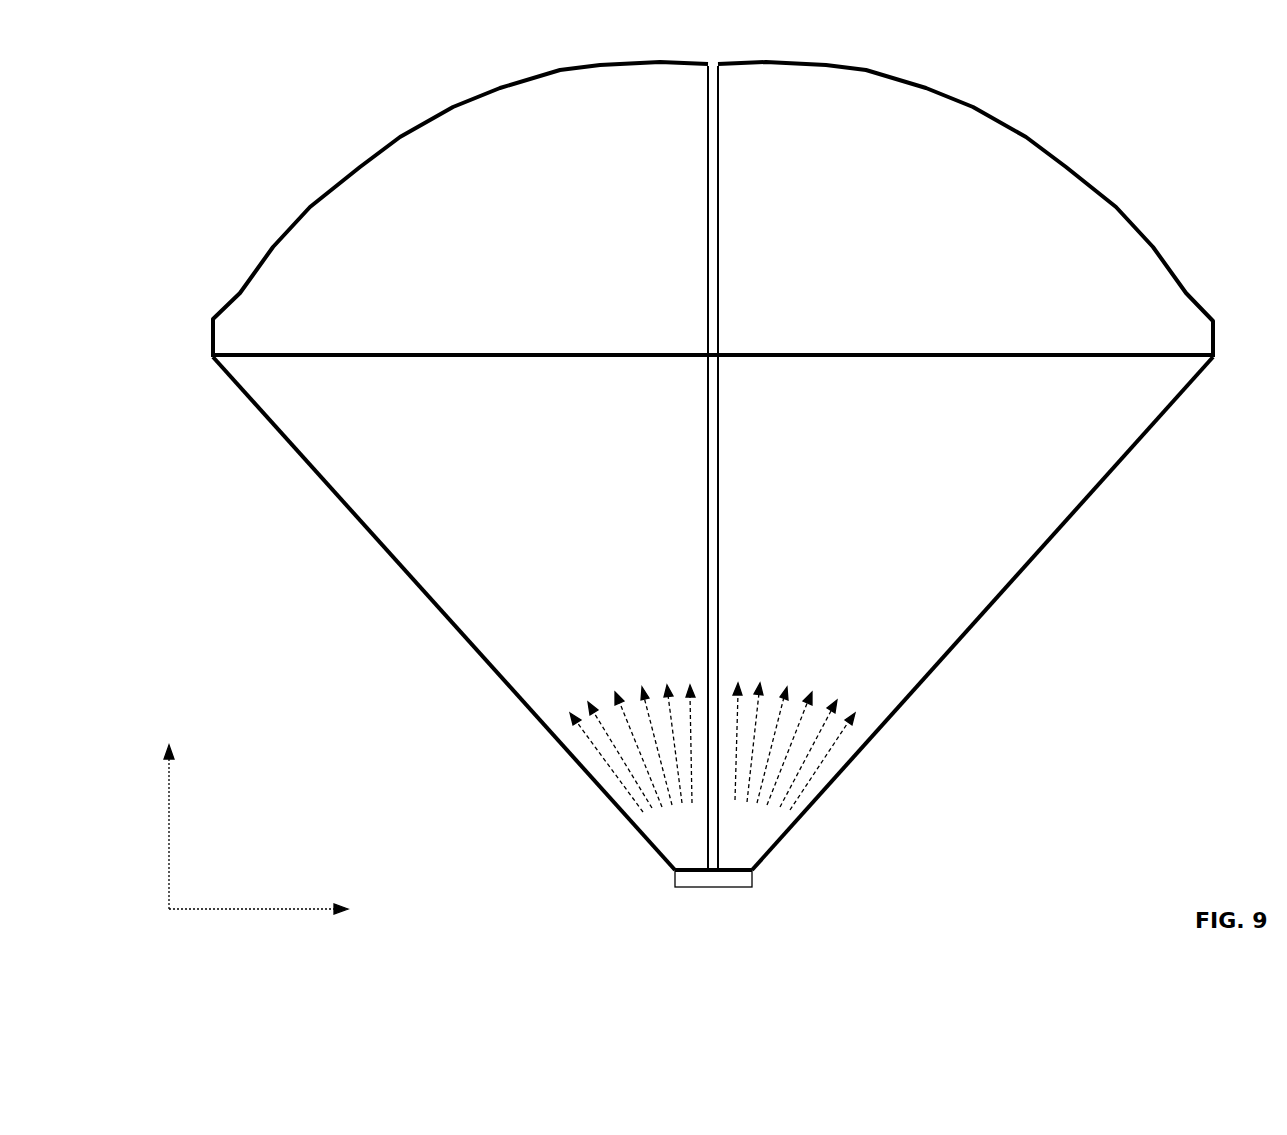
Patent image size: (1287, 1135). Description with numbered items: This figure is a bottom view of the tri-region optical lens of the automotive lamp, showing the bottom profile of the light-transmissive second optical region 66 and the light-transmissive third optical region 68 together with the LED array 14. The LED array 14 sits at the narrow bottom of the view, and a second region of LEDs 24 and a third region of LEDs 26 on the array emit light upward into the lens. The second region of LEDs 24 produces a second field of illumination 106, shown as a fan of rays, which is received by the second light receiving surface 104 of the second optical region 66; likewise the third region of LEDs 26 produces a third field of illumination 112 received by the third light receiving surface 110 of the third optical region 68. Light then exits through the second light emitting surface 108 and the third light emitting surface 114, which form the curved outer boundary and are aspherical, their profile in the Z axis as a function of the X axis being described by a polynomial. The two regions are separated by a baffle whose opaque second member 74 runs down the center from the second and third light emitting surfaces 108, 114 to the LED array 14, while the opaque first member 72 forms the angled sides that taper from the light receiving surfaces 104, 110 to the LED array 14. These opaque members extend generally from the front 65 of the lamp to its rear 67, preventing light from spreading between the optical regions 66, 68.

The LED array 14 is at (742, 888).
The second region of LEDs 24 is at (745, 860).
The third region of LEDs 26 is at (694, 860).
The front 65 is at (713, 455).
The light-transmissive second optical region 66 is at (914, 223).
The rear 67 is at (524, 879).
The light-transmissive third optical region 68 is at (529, 228).
The opaque first member 72 is at (1062, 502).
The opaque second member 74 is at (720, 450).
The second light receiving surface 104 is at (826, 360).
The second field of illumination 106 is at (793, 755).
The second light emitting surface 108 is at (1118, 207).
The third light receiving surface 110 is at (468, 357).
The third field of illumination 112 is at (630, 747).
The third light emitting surface 114 is at (273, 247).